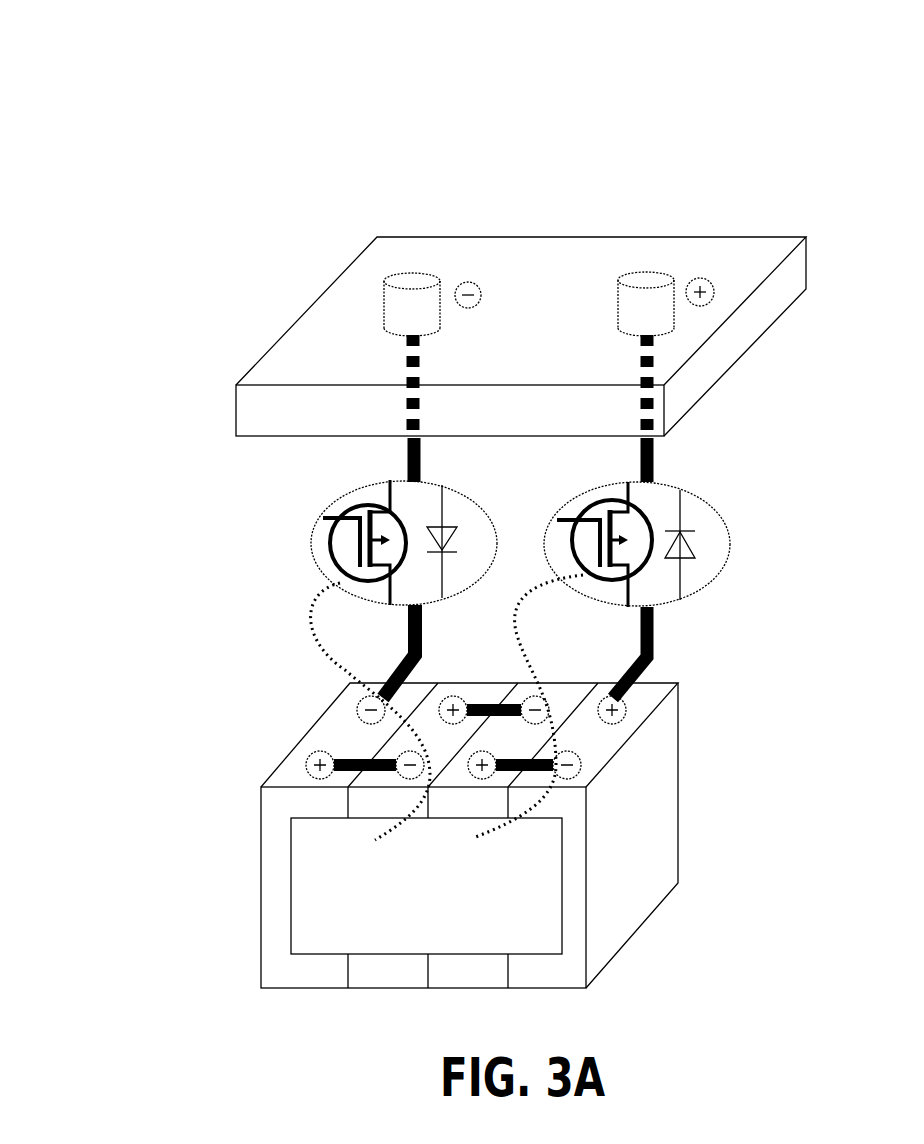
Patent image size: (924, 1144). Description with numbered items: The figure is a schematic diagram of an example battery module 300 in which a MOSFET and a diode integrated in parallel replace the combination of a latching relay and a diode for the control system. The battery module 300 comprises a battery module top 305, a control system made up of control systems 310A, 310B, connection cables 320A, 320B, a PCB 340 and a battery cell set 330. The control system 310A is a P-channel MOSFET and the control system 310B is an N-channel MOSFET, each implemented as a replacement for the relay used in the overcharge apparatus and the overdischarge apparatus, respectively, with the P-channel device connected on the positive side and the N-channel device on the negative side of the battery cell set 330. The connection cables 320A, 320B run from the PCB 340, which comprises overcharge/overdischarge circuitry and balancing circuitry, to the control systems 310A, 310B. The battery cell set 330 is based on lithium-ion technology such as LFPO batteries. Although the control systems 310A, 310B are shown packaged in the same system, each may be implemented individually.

The battery module 300 is at (132, 99).
The battery module top 305 is at (575, 255).
The control system 310A is at (717, 512).
The control system 310B is at (318, 565).
The connection cable 320A is at (543, 660).
The connection cable 320B is at (352, 655).
The battery cell set 330 is at (643, 823).
The PCB 340 is at (505, 924).